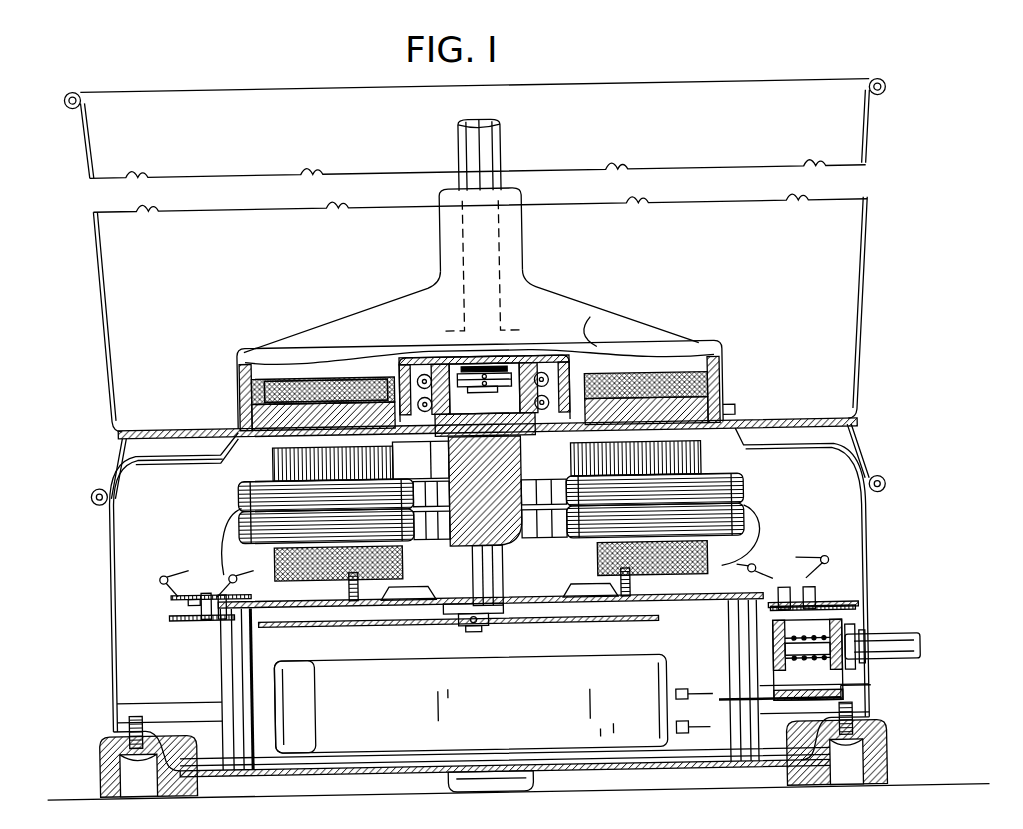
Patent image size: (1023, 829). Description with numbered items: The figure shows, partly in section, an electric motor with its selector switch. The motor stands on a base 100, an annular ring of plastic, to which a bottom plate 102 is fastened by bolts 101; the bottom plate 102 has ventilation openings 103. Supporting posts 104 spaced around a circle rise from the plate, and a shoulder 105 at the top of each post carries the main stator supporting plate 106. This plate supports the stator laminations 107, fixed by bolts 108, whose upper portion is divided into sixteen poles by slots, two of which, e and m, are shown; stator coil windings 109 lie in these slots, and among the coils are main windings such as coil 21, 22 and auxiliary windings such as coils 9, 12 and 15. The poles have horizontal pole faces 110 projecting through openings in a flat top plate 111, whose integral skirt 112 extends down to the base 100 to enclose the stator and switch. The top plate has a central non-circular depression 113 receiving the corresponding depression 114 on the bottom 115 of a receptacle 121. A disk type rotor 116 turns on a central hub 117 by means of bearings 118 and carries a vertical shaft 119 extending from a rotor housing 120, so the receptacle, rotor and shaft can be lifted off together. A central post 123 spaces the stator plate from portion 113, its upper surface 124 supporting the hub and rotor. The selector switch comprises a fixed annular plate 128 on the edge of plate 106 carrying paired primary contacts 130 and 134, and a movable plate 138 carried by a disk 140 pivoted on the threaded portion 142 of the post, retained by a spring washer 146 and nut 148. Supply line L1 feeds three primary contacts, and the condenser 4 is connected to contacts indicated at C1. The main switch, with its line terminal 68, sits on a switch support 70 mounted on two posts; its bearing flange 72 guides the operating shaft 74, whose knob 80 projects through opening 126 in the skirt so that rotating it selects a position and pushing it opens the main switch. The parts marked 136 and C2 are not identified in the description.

The condenser 4 is at (582, 668).
The auxiliary coil winding 9 is at (811, 562).
The auxiliary coil winding 12 is at (746, 570).
The auxiliary coil winding 15 is at (752, 525).
The contact 21 is at (168, 570).
The main coil winding 22 is at (222, 527).
The terminal 68 is at (782, 672).
The switch support 70 is at (770, 706).
The bearing flange 72 is at (866, 693).
The switch operating shaft 74 is at (803, 650).
The knob 80 is at (893, 642).
The base 100 is at (94, 756).
The bolts 101 is at (132, 722).
The bottom plate 102 is at (318, 764).
The ventilation openings 103 is at (406, 770).
The supporting posts 104 is at (238, 708).
The shoulder 105 is at (242, 620).
The main stator supporting plate 106 is at (302, 624).
The stator laminations 107 is at (290, 565).
The bolts 108 is at (362, 604).
The stator coil windings 109 is at (440, 566).
The horizontal pole faces 110 is at (268, 440).
The top plate 111 is at (228, 455).
The skirt 112 is at (108, 548).
The central depression 113 is at (440, 440).
The central depression 114 is at (592, 318).
The receptacle bottom 115 is at (160, 437).
The rotor 116 is at (294, 378).
The central hub 117 is at (500, 362).
The bearings 118 is at (420, 366).
The vertical shaft 119 is at (504, 138).
The rotor housing 120 is at (340, 350).
The receptacle 121 is at (100, 268).
The central post 123 is at (500, 578).
The upper surface 124 is at (522, 468).
The opening 126 is at (864, 644).
The switch member 128 is at (168, 592).
The primary contacts 130 is at (185, 600).
The primary contacts 134 is at (218, 615).
The threaded rod 136 is at (172, 616).
The switch member 138 is at (200, 616).
The disk 140 is at (300, 658).
The threaded portion 142 is at (490, 626).
The spring washer 146 is at (458, 616).
The nut 148 is at (472, 632).
The stator slot e is at (300, 460).
The stator slot m is at (700, 464).
The supply line L1 is at (234, 577).
The condenser terminal connection C1 is at (688, 733).
The capacitor C2 is at (690, 696).